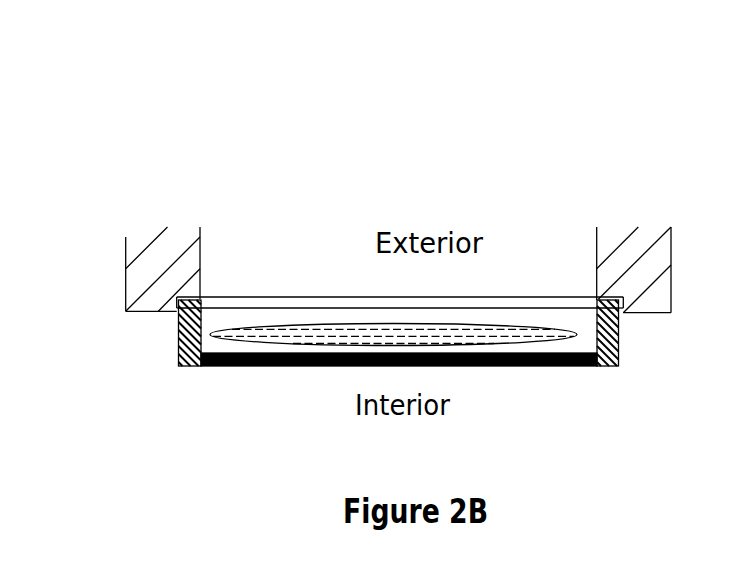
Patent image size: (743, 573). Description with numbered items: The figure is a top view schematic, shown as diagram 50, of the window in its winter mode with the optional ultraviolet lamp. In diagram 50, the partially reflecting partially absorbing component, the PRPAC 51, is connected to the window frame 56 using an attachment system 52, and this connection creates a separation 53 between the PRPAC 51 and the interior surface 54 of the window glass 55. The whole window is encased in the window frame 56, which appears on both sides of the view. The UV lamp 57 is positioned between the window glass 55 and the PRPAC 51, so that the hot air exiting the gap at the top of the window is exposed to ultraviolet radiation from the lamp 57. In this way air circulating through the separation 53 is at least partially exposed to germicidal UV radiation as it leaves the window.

The diagram 50 is at (408, 169).
The PRPAC 51 is at (488, 365).
The attachment system 52 is at (179, 334).
The separation 53 is at (233, 313).
The interior surface 54 is at (275, 302).
The window glass 55 is at (328, 292).
The window frame 56 is at (126, 292).
The UV lamp 57 is at (352, 333).